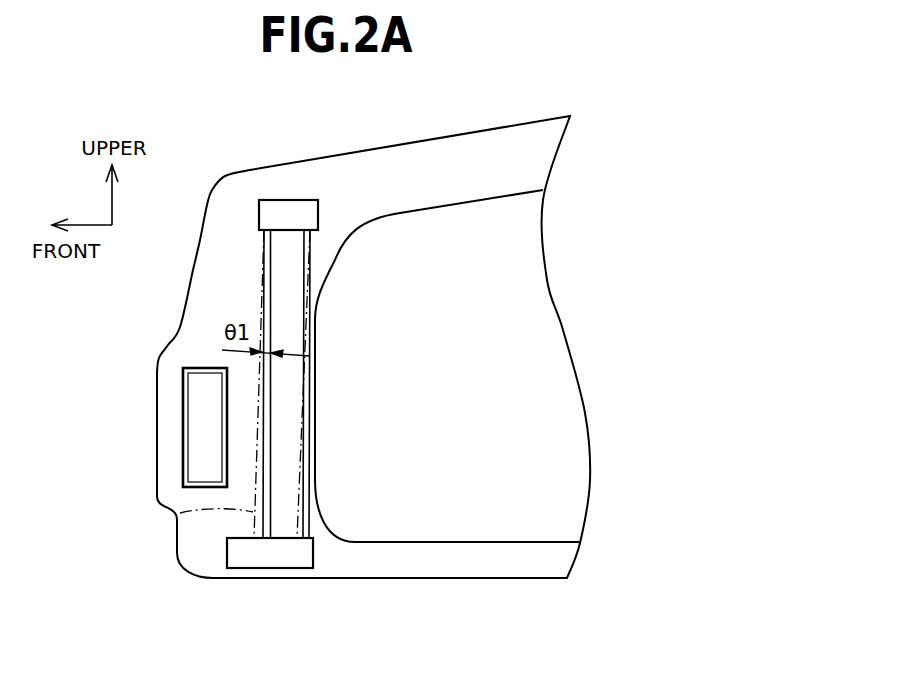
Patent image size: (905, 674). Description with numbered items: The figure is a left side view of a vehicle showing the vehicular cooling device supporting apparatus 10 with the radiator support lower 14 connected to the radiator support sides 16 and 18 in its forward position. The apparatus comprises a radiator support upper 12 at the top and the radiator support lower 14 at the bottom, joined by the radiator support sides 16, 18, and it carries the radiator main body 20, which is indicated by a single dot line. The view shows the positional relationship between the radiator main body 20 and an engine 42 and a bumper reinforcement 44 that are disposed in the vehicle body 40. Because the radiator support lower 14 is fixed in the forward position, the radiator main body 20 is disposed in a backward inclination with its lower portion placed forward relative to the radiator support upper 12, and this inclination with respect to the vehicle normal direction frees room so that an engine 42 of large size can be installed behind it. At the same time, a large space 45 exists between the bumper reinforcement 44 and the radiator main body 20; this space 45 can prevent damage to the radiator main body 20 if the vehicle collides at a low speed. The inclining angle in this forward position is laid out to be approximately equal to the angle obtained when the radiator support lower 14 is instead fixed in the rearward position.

The vehicular cooling device supporting apparatus 10 is at (238, 208).
The radiator support upper 12 is at (288, 210).
The radiator support lower 14 is at (272, 553).
The radiator support side 16 is at (283, 285).
The radiator support side 18 is at (213, 384).
The radiator main body 20 is at (180, 513).
The vehicle body 40 is at (400, 144).
The engine 42 is at (540, 333).
The bumper reinforcement 44 is at (185, 430).
The space 45 is at (254, 437).